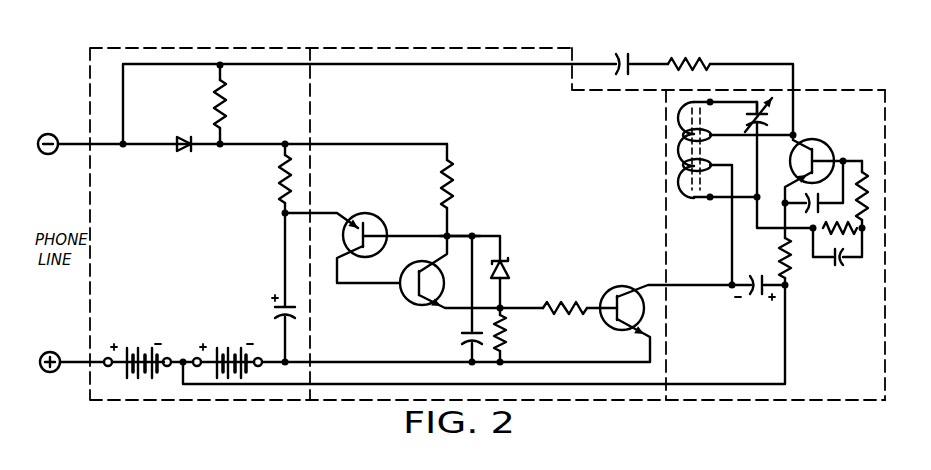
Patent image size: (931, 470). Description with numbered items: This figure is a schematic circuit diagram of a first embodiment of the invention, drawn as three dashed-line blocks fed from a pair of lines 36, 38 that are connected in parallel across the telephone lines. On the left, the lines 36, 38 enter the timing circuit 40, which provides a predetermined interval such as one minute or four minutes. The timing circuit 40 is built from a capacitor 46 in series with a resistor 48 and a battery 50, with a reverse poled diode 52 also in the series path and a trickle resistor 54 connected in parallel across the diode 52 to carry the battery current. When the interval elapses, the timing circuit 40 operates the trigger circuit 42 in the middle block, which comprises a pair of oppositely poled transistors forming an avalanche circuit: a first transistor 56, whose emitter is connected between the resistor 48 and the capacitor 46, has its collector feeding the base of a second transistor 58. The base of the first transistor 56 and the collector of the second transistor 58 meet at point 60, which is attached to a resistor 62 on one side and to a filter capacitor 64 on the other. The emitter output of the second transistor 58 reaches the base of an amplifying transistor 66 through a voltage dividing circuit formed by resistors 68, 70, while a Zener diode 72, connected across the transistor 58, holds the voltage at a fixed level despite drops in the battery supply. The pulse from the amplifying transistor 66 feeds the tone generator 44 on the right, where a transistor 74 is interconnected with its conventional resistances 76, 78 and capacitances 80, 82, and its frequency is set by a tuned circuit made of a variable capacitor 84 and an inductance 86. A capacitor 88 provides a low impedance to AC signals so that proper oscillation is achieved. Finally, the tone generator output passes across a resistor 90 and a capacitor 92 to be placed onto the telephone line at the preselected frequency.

The line 36 is at (72, 143).
The line 38 is at (70, 372).
The timing circuit 40 is at (226, 48).
The trigger circuit 42 is at (443, 48).
The tone generator circuit 44 is at (844, 90).
The capacitor 46 is at (277, 312).
The resistor 48 is at (280, 196).
The battery 50 is at (166, 338).
The reverse poled diode 52 is at (182, 151).
The trickle resistor 54 is at (227, 97).
The first transistor 56 is at (372, 221).
The second transistor 58 is at (402, 300).
The point 60 is at (452, 234).
The resistor 62 is at (453, 165).
The filter capacitor 64 is at (461, 336).
The amplifying transistor 66 is at (632, 287).
The voltage dividing circuit resistor 68 is at (570, 303).
The voltage dividing circuit resistor 70 is at (507, 332).
The Zener diode 72 is at (512, 268).
The transistor 74 is at (822, 146).
The resistance 76 is at (863, 172).
The resistance 78 is at (847, 232).
The capacitance 80 is at (823, 192).
The capacitance 82 is at (840, 268).
The variable capacitor 84 is at (750, 118).
The inductance 86 is at (698, 200).
The capacitor 88 is at (755, 299).
The resistor 90 is at (693, 61).
The capacitor 92 is at (626, 57).